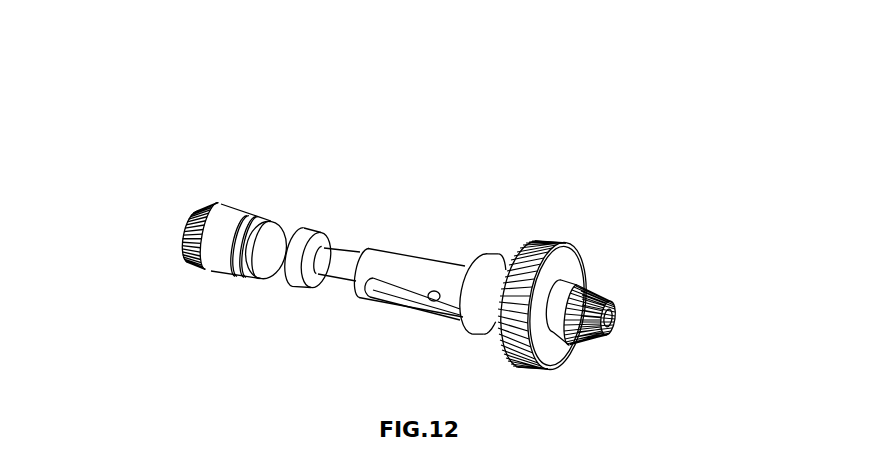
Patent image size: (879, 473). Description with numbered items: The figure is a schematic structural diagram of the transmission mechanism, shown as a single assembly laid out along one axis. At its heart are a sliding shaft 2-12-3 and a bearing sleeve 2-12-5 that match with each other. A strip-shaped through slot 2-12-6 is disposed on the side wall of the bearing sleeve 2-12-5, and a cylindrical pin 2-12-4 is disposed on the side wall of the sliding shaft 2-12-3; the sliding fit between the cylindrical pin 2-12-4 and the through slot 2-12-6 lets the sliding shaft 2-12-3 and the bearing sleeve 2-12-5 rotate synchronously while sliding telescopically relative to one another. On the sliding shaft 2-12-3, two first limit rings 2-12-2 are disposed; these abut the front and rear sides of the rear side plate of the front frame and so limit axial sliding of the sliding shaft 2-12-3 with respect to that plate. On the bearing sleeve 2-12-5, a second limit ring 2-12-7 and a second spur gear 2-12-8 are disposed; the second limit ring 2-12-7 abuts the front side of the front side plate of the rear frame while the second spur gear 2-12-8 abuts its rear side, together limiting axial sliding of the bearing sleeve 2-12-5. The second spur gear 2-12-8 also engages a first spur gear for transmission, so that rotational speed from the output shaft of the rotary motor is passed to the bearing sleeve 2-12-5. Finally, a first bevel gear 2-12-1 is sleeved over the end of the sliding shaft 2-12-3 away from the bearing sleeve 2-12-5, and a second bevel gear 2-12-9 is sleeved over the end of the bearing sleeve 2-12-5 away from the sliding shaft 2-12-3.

The first bevel gear 2-12-1 is at (197, 207).
The first limit rings 2-12-2 is at (300, 238).
The sliding shaft 2-12-3 is at (338, 250).
The cylindrical pin 2-12-4 is at (435, 291).
The bearing sleeve 2-12-5 is at (457, 268).
The strip-shaped through slot 2-12-6 is at (373, 283).
The second limit ring 2-12-7 is at (495, 252).
The second spur gear 2-12-8 is at (573, 247).
The second bevel gear 2-12-9 is at (620, 320).